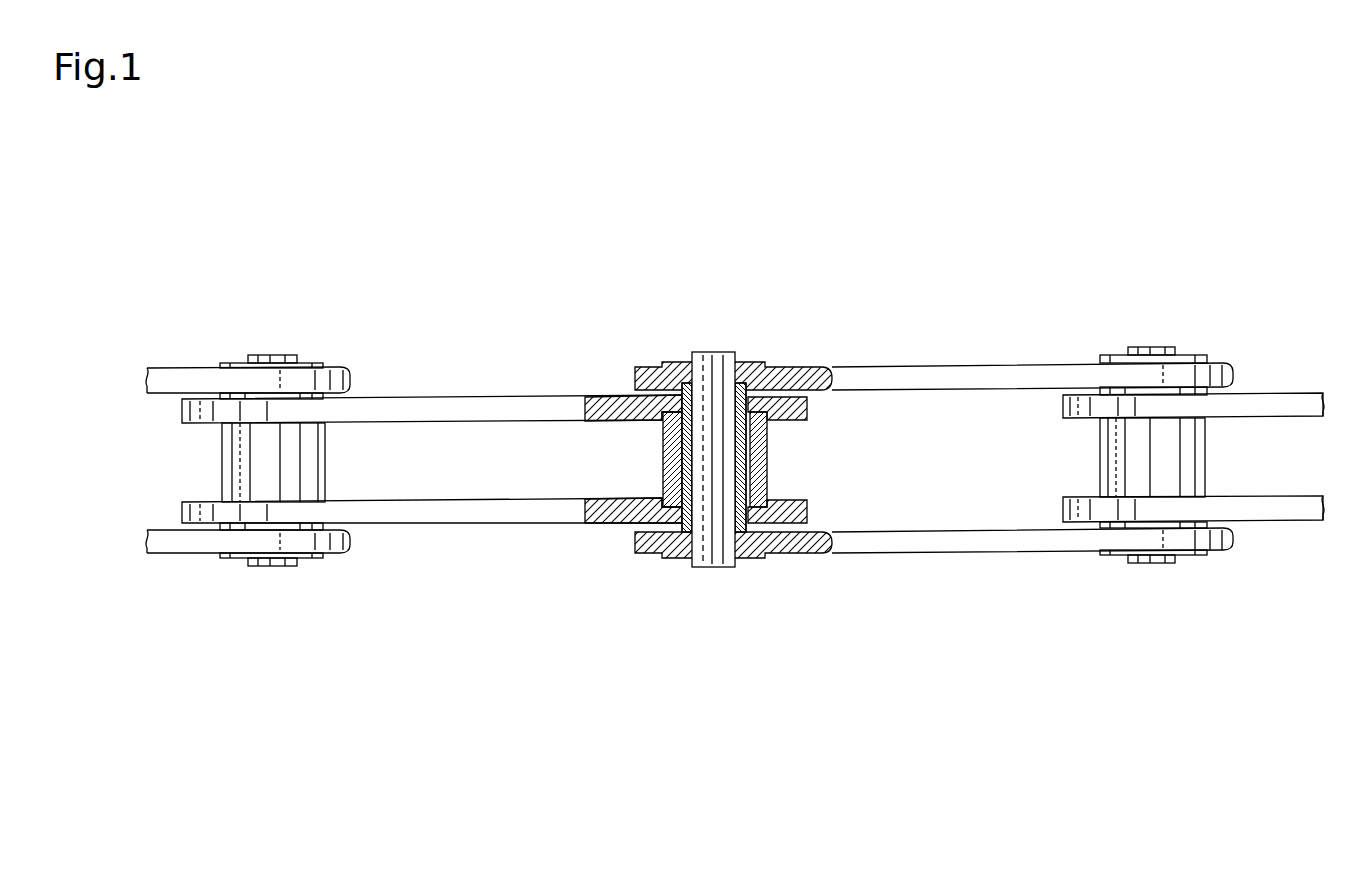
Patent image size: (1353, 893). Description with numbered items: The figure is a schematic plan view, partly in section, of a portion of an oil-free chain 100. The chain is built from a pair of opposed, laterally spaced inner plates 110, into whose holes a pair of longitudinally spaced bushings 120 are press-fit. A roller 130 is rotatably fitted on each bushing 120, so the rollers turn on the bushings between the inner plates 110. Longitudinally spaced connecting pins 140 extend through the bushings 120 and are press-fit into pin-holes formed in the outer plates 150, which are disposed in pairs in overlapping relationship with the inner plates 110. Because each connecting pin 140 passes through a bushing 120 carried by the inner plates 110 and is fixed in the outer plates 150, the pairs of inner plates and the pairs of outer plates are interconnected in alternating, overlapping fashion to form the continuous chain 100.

The oil-free chain 100 is at (583, 268).
The inner plate 110 is at (182, 410).
The bushing 120 is at (745, 440).
The roller 130 is at (237, 458).
The connecting pin 140 is at (272, 355).
The outer plate 150 is at (178, 382).